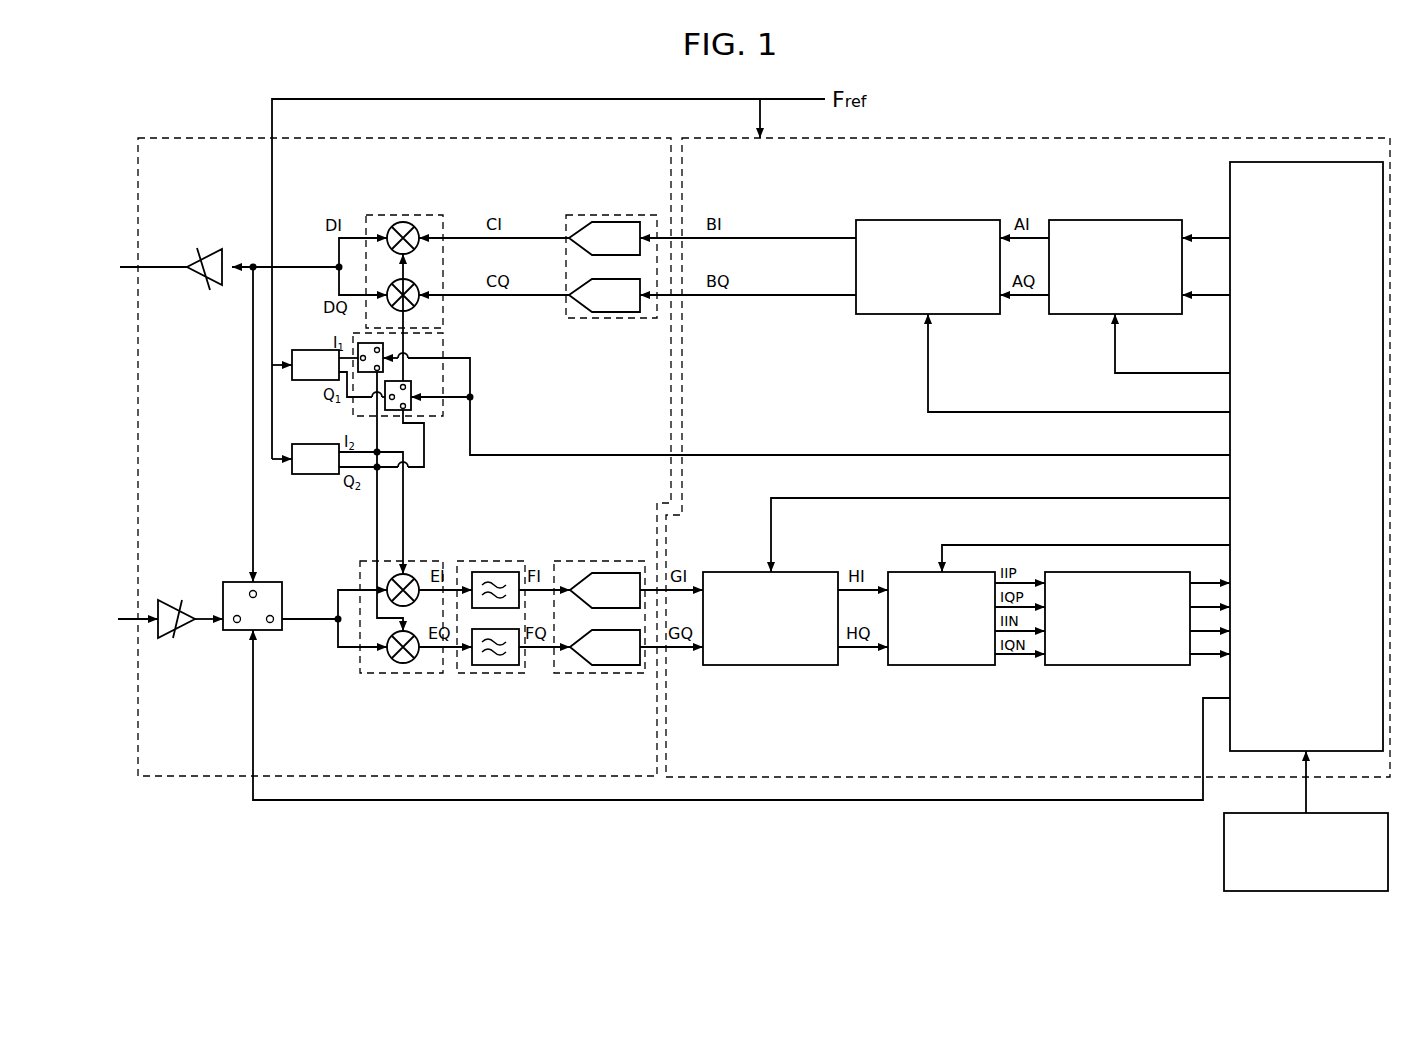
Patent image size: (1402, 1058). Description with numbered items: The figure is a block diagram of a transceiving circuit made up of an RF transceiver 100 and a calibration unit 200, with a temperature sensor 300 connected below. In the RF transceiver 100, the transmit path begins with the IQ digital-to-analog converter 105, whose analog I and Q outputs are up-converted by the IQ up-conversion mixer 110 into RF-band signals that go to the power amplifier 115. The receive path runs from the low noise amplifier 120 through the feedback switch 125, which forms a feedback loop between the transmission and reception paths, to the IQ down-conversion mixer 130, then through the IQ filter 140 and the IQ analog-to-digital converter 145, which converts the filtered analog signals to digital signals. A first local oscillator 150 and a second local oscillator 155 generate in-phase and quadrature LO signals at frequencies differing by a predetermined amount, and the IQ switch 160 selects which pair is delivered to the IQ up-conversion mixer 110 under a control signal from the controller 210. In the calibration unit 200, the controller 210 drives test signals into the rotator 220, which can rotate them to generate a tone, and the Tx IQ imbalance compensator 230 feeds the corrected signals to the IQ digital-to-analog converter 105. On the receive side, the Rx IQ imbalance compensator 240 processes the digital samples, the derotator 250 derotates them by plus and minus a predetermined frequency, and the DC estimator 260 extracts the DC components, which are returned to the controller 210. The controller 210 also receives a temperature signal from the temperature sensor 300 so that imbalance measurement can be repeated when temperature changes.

The RF transceiver 100 is at (403, 138).
The IQ DAC 105 is at (612, 318).
The IQ up-conversion mixer 110 is at (444, 310).
The power amplifier 115 is at (196, 283).
The low noise amplifier 120 is at (180, 637).
The feedback switch 125 is at (282, 634).
The IQ down-conversion mixer 130 is at (396, 674).
The IQ filter 140 is at (492, 674).
The IQ ADC 145 is at (600, 674).
The first local oscillator 150 is at (310, 350).
The second local oscillator 155 is at (312, 474).
The IQ switch 160 is at (446, 418).
The calibration unit 200 is at (1042, 138).
The controller 210 is at (1304, 162).
The rotator 220 is at (1118, 220).
The Tx IQ imbalance compensator 230 is at (882, 315).
The Rx IQ imbalance compensator 240 is at (770, 666).
The derotator 250 is at (940, 666).
The DC estimator 260 is at (1110, 666).
The temperature sensor 300 is at (1224, 850).